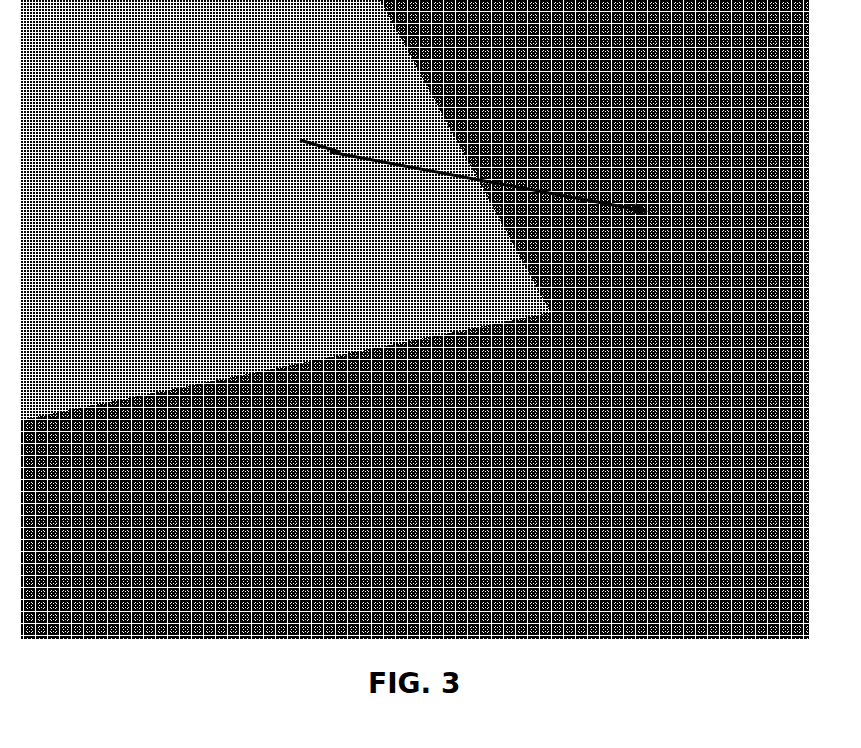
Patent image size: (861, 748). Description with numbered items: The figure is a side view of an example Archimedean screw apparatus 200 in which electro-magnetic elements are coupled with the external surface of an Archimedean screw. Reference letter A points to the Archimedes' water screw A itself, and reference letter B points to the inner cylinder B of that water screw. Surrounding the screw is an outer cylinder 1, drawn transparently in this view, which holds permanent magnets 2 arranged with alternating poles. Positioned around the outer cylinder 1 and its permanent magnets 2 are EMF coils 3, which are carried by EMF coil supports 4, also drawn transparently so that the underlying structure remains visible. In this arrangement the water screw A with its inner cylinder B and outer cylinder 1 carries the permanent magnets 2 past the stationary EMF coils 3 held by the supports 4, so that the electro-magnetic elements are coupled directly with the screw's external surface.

The Archimedean screw apparatus 200 is at (290, 68).
The outer cylinder 1 is at (108, 299).
The permanent magnets 2 is at (212, 322).
The EMF coils 3 is at (208, 354).
The EMF coil supports 4 is at (152, 394).
The Archimedes' water screw A is at (330, 152).
The inner cylinder B is at (640, 208).